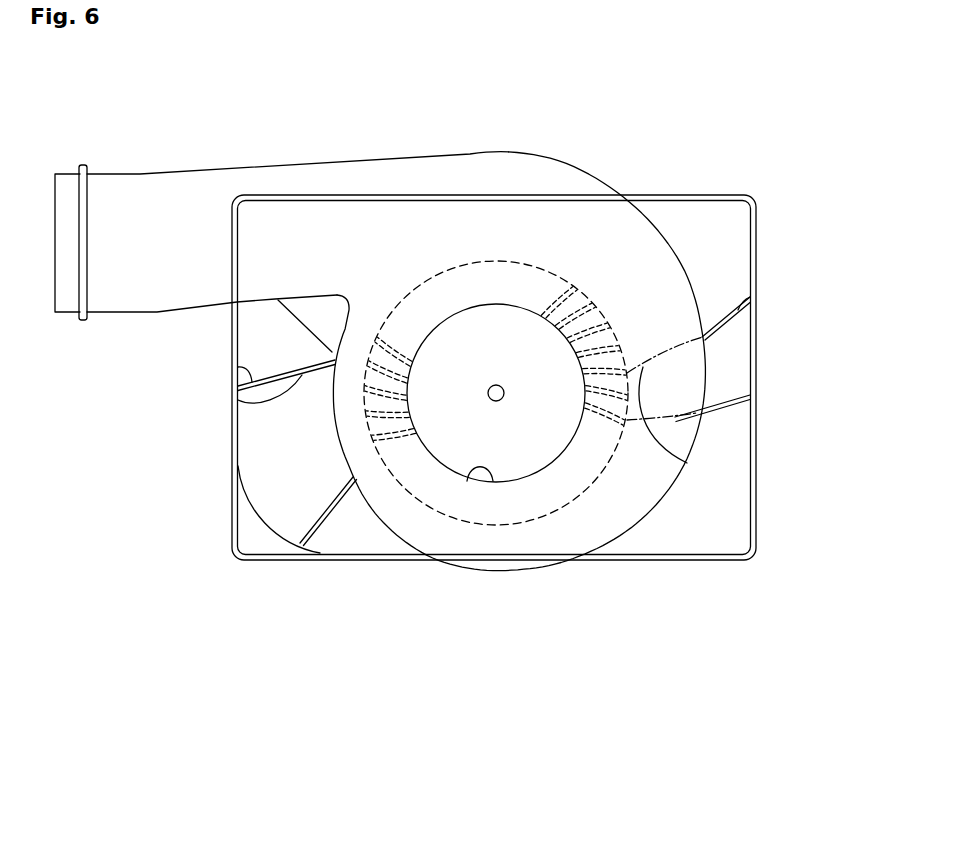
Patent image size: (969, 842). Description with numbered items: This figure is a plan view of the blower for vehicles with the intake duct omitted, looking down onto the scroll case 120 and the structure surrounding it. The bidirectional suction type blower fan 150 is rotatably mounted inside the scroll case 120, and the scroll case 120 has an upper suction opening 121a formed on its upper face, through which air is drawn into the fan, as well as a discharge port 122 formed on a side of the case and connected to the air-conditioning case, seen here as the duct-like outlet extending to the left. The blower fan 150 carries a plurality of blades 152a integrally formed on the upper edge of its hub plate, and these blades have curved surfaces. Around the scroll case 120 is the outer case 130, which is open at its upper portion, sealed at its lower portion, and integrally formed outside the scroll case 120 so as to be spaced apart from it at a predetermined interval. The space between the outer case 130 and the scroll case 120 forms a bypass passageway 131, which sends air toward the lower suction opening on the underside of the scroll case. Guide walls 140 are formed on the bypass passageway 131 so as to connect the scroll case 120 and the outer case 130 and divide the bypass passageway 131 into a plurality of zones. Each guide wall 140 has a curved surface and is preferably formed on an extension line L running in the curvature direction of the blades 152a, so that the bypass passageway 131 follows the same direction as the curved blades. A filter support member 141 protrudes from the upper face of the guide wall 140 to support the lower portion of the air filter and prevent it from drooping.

The scroll case 120 is at (593, 170).
The upper suction opening 121a is at (493, 487).
The discharge port 122 is at (124, 202).
The outer case 130 is at (732, 195).
The bypass passageway 131 is at (283, 470).
The guide wall 140 is at (250, 403).
The filter support member 141 is at (238, 368).
The bidirectional suction type blower fan 150 is at (555, 507).
The blades 152a is at (407, 447).
The extension line L is at (675, 418).